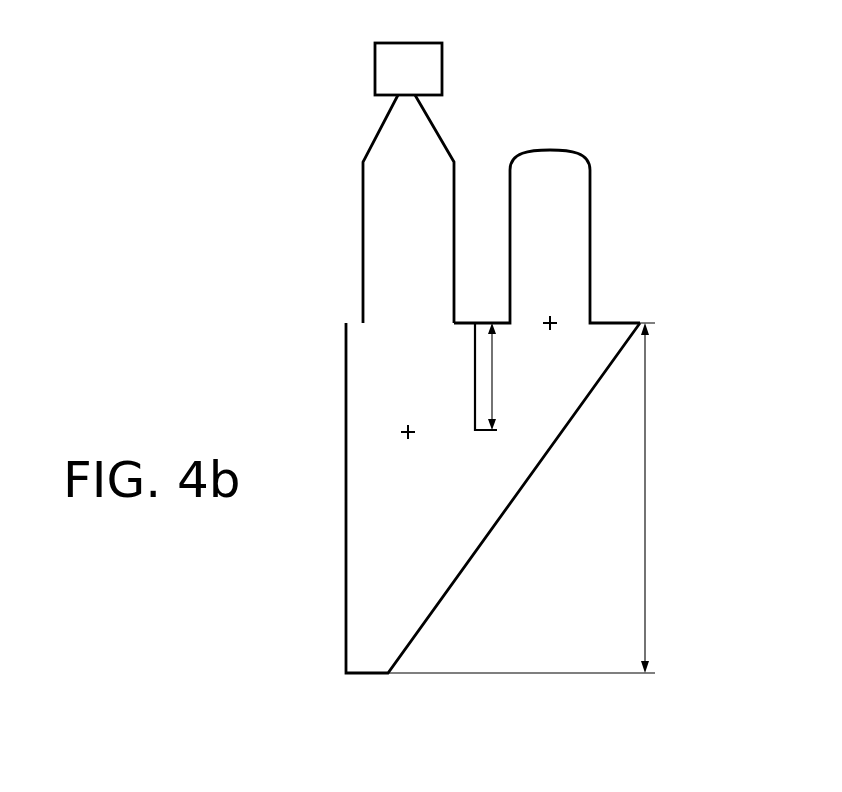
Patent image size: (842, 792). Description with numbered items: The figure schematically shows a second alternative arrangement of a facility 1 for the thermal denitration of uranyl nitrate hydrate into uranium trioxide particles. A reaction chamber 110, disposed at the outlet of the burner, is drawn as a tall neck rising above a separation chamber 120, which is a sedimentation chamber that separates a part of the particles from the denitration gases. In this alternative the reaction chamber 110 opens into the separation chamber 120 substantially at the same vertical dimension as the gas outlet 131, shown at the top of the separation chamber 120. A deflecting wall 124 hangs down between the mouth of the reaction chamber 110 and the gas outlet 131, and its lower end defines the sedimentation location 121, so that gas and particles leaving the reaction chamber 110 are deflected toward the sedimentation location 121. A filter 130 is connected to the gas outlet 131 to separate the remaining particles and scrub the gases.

The facility 1 is at (342, 108).
The reaction chamber 110 is at (390, 242).
The separation chamber 120 is at (377, 509).
The sedimentation location 121 is at (405, 431).
The deflecting wall 124 is at (475, 368).
The filter 130 is at (562, 228).
The gas outlet 131 is at (553, 317).